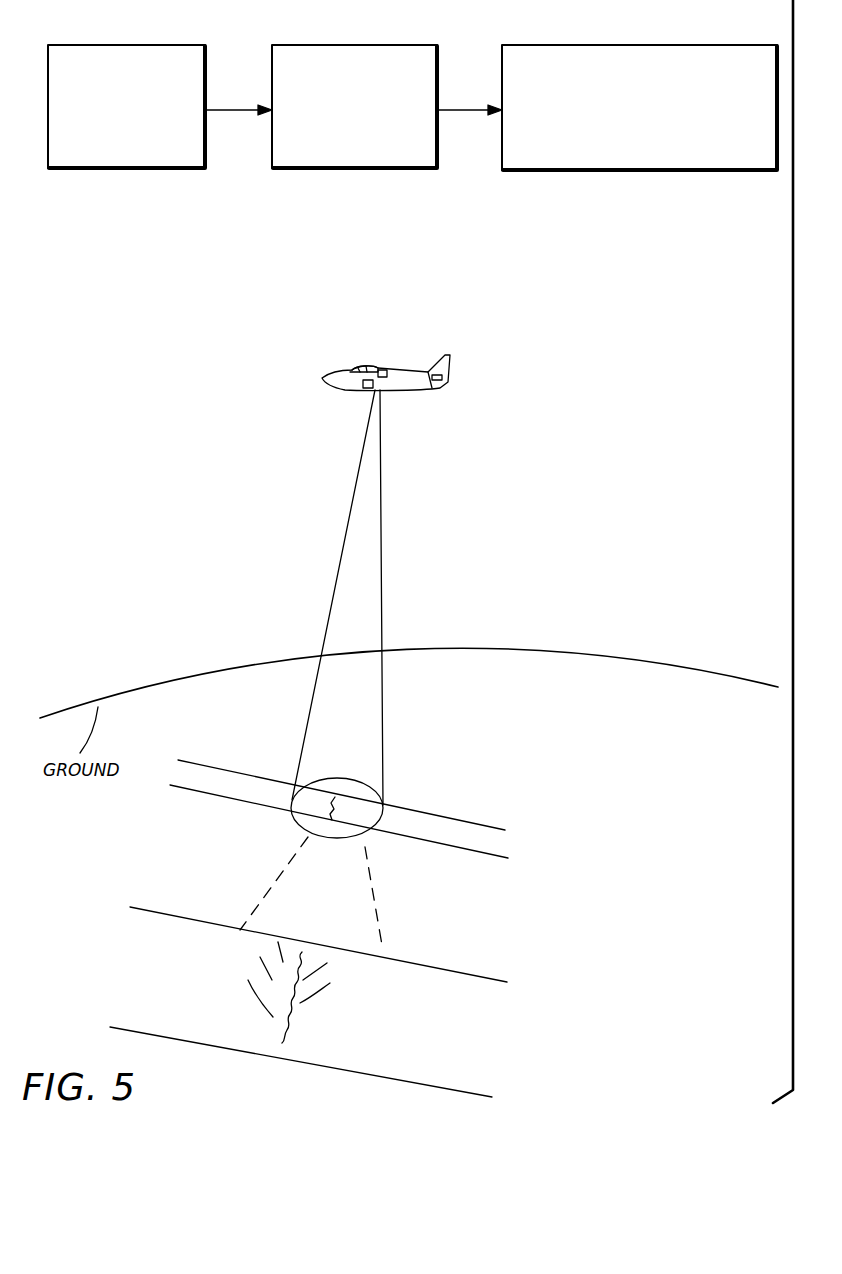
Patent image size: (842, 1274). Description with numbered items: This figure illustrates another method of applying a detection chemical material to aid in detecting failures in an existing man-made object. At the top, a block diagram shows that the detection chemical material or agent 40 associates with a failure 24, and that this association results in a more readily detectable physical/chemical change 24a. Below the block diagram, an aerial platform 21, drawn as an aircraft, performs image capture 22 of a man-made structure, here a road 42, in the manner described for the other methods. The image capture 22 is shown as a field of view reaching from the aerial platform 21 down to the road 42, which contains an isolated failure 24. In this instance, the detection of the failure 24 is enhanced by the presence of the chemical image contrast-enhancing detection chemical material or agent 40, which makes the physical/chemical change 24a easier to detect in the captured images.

The detection chemical material or agent 40 is at (115, 169).
The failure 24 is at (388, 169).
The detectable physical/chemical change 24a is at (660, 171).
The aerial platform 21 is at (390, 365).
The image capture 22 is at (372, 793).
The road 42 is at (400, 961).